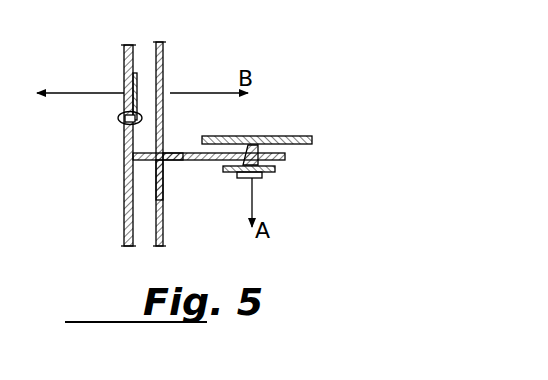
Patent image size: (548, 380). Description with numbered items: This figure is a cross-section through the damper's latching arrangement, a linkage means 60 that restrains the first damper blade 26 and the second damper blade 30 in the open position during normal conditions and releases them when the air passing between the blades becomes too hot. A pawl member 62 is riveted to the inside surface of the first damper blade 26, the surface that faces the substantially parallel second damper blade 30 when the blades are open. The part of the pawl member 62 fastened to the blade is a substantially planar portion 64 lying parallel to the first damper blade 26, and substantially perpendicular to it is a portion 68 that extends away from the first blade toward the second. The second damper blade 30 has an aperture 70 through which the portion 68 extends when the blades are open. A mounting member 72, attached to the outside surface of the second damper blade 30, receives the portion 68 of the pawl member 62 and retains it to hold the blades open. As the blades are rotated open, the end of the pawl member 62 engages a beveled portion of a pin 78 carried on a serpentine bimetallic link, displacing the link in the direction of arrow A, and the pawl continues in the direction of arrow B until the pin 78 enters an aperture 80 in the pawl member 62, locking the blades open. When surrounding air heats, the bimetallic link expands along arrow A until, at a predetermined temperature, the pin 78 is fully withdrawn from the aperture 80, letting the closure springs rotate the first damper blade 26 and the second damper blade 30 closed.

The first damper blade 26 is at (124, 60).
The second damper blade 30 is at (163, 58).
The linkage means 60 is at (302, 115).
The pawl member 62 is at (200, 161).
The planar portion of pawl member 64 is at (122, 106).
The perpendicular portion of pawl member 68 is at (178, 153).
The aperture 70 is at (163, 162).
The mounting member 72 is at (313, 147).
The pin 78 is at (265, 173).
The aperture in pawl 80 is at (242, 162).